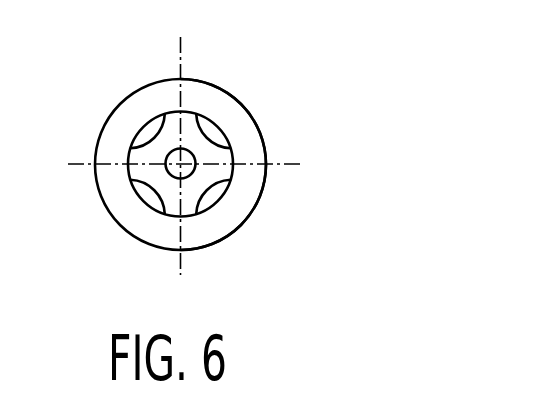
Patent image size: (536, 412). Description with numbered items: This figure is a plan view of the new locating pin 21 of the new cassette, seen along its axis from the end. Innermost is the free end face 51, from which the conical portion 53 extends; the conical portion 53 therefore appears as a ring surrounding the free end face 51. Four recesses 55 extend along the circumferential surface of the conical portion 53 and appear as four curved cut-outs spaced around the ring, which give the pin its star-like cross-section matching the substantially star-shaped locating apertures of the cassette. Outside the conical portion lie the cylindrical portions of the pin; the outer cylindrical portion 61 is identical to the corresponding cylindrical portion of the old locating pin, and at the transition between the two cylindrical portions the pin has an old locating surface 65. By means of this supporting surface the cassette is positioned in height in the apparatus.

The new locating pin 21 is at (118, 105).
The free end face 51 is at (192, 154).
The conical portion 53 is at (233, 155).
The recesses 55 is at (205, 121).
The cylindrical portion 61 is at (258, 202).
The old locating surface 65 is at (220, 223).